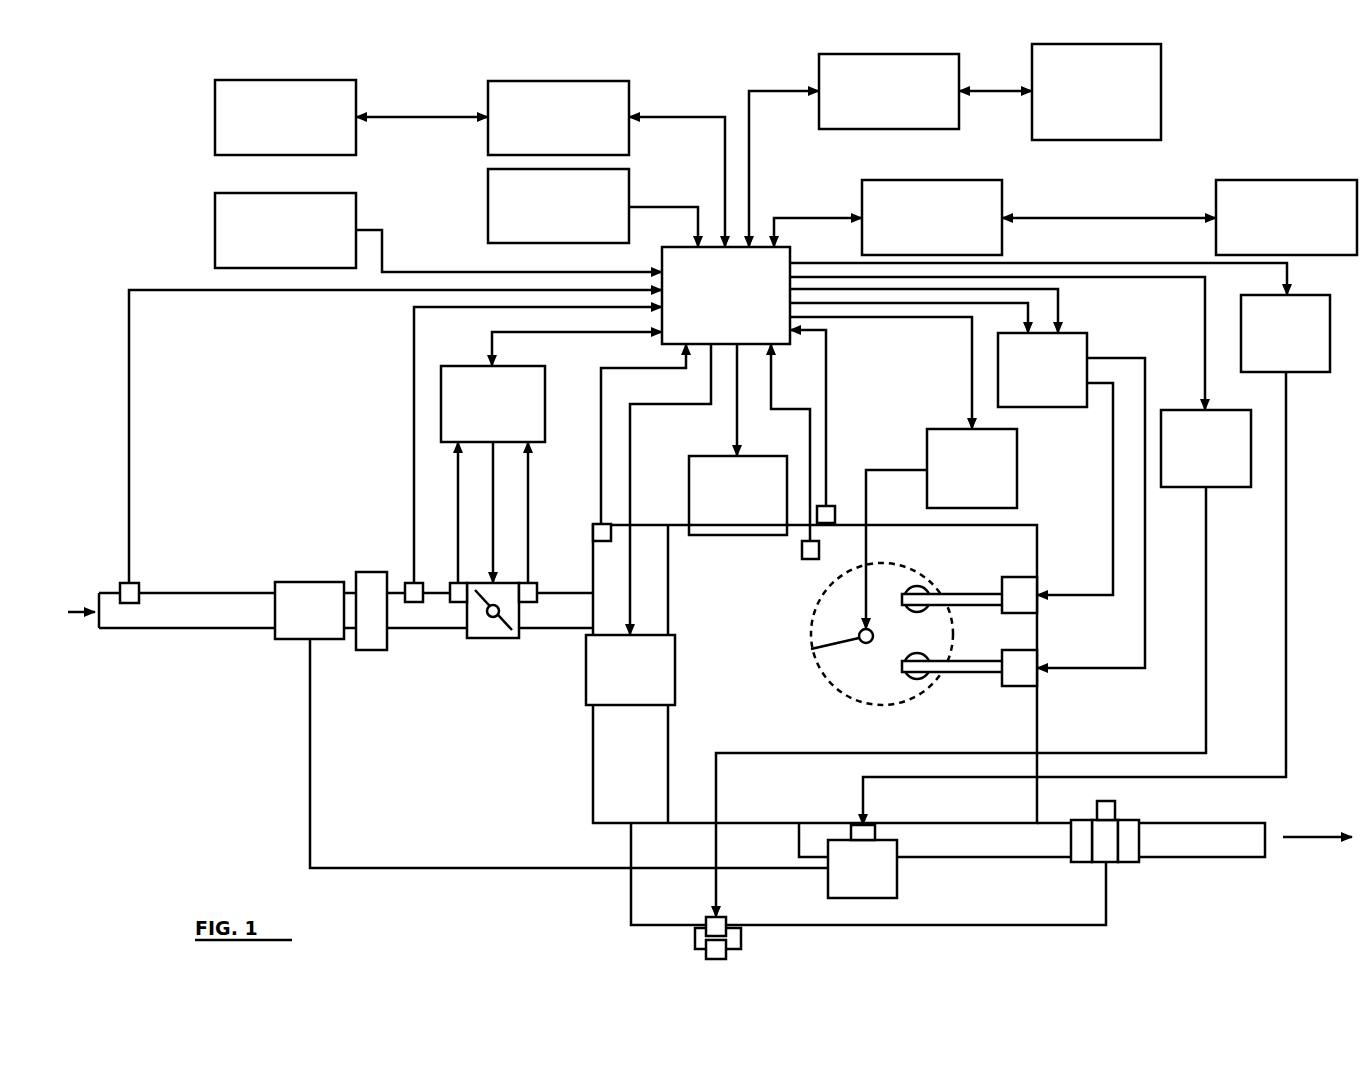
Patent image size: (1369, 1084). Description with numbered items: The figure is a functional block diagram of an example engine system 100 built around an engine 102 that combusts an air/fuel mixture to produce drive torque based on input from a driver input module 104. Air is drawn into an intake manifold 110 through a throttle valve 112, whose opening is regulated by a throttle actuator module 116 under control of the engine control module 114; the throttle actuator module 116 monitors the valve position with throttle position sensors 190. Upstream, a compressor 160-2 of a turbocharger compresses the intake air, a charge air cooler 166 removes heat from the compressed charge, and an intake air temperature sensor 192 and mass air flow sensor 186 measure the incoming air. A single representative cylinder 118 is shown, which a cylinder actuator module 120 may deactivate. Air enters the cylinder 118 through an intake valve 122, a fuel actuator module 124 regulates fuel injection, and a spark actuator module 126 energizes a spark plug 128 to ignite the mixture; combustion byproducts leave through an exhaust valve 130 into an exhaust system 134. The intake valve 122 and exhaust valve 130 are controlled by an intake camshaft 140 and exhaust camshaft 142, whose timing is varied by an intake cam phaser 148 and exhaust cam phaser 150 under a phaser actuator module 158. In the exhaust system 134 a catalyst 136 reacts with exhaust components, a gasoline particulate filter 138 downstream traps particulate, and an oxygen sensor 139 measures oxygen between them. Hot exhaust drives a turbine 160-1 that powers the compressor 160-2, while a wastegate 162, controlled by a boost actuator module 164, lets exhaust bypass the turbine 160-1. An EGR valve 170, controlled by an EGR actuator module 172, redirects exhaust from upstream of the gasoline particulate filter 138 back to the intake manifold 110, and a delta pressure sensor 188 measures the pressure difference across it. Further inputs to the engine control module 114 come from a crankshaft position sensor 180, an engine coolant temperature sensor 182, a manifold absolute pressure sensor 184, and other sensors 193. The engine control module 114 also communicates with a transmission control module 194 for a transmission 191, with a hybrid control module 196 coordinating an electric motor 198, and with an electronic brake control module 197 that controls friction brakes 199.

The engine system 100 is at (106, 96).
The engine 102 is at (1037, 538).
The driver input module 104 is at (488, 207).
The intake manifold 110 is at (593, 755).
The throttle valve 112 is at (500, 638).
The engine control module 114 is at (790, 256).
The throttle actuator module 116 is at (470, 366).
The cylinder 118 is at (830, 686).
The cylinder actuator module 120 is at (752, 456).
The intake valve 122 is at (917, 586).
The fuel actuator module 124 is at (645, 705).
The spark actuator module 126 is at (1017, 470).
The spark plug 128 is at (818, 650).
The exhaust valve 130 is at (915, 692).
The exhaust system 134 is at (1232, 860).
The catalyst 136 is at (1080, 862).
The gasoline particulate filter 138 is at (1130, 862).
The oxygen sensor 139 is at (1097, 810).
The intake camshaft 140 is at (978, 594).
The exhaust camshaft 142 is at (980, 672).
The intake cam phaser 148 is at (1018, 577).
The exhaust cam phaser 150 is at (1018, 686).
The phaser actuator module 158 is at (1087, 350).
The turbine 160-1 is at (897, 876).
The compressor 160-2 is at (290, 640).
The wastegate 162 is at (875, 831).
The boost actuator module 164 is at (1306, 372).
The charge air cooler 166 is at (368, 650).
The EGR valve 170 is at (726, 921).
The EGR actuator module 172 is at (1226, 487).
The crankshaft position sensor 180 is at (835, 506).
The engine coolant temperature sensor 182 is at (810, 559).
The manifold absolute pressure sensor 184 is at (601, 524).
The mass air flow sensor 186 is at (410, 583).
The delta pressure sensor 188 is at (706, 950).
The throttle position sensor 190 is at (458, 606).
The transmission 191 is at (215, 113).
The intake air temperature sensor 192 is at (122, 590).
The other sensors 193 is at (215, 230).
The transmission control module 194 is at (488, 96).
The hybrid control module 196 is at (890, 129).
The electronic brake control module 197 is at (1002, 203).
The electric motor 198 is at (1100, 140).
The friction brakes 199 is at (1292, 180).